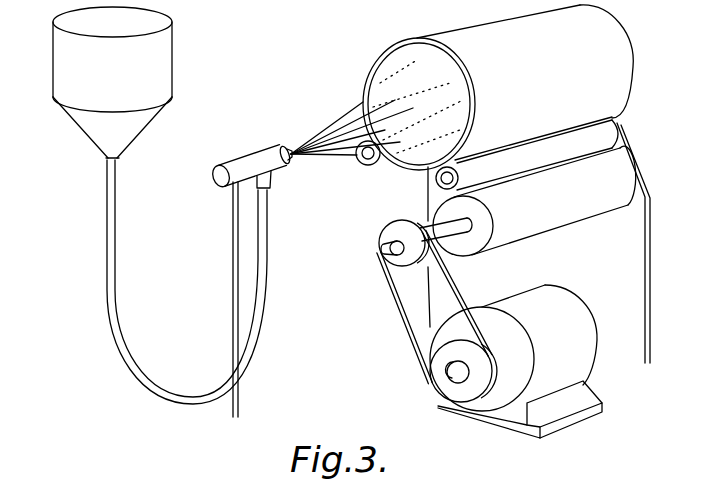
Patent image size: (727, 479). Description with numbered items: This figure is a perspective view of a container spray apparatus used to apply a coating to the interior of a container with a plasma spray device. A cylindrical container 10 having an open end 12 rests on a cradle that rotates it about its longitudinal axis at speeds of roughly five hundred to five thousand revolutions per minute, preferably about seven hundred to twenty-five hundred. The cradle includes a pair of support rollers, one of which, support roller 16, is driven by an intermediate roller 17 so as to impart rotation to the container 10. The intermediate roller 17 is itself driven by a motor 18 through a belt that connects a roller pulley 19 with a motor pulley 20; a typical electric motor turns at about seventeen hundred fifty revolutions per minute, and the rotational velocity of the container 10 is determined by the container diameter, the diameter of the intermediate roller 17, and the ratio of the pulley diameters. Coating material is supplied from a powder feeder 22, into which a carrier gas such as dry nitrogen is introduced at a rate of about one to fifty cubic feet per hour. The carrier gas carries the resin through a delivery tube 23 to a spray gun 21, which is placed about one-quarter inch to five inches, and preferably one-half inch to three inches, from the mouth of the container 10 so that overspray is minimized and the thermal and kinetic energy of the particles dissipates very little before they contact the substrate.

The cylindrical container 10 is at (498, 87).
The open end 12 is at (418, 106).
The support roller 16 is at (612, 133).
The intermediate roller 17 is at (528, 201).
The motor 18 is at (516, 361).
The roller pulley 19 is at (393, 226).
The motor pulley 20 is at (437, 388).
The spray gun 21 is at (218, 175).
The powder feeder 22 is at (170, 44).
The delivery tube 23 is at (110, 262).